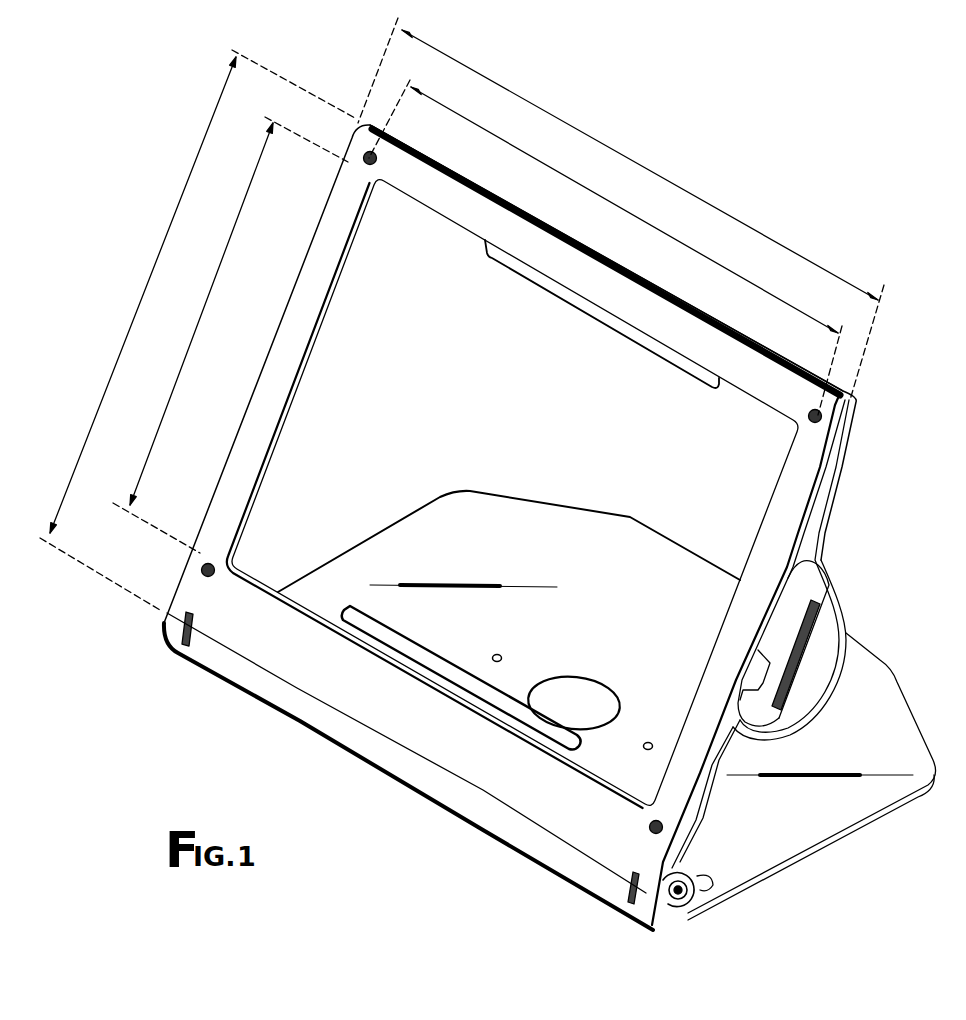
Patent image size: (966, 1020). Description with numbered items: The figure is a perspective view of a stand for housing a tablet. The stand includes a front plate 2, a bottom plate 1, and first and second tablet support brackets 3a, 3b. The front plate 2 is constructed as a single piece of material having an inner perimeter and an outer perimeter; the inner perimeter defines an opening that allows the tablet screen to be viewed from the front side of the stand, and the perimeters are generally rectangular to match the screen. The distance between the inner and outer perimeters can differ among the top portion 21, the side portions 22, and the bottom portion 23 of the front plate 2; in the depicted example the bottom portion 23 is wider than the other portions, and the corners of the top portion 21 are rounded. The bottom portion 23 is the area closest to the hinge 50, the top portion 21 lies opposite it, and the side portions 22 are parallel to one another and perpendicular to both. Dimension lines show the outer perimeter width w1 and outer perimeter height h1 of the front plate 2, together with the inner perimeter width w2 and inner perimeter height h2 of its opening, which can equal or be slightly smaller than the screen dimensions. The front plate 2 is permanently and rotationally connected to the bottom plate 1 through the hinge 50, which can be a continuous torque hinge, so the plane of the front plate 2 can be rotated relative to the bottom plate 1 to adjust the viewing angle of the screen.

The bottom plate 1 is at (492, 560).
The front plate 2 is at (323, 257).
The top portion 21 is at (662, 313).
The side portions 22 is at (280, 357).
The bottom portion 23 is at (497, 777).
The first tablet support bracket 3a is at (583, 305).
The second tablet support bracket 3b is at (437, 667).
The hinge 50 is at (683, 887).
The outer perimeter height h1 is at (184, 360).
The inner perimeter height h2 is at (178, 207).
The outer perimeter width w1 is at (676, 183).
The inner perimeter width w2 is at (700, 253).